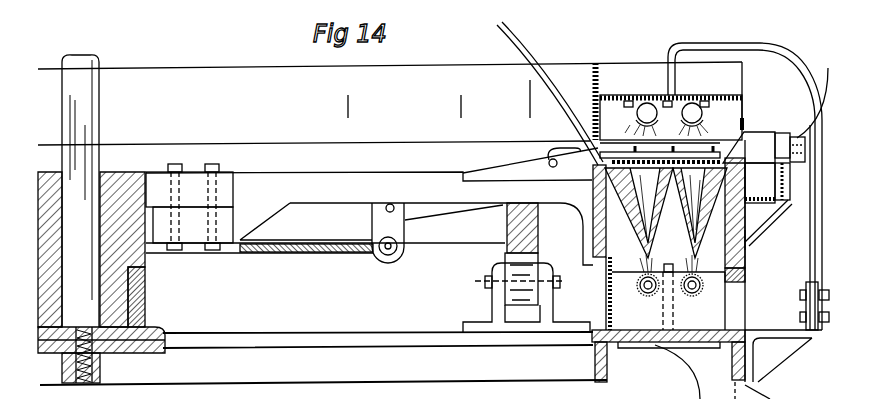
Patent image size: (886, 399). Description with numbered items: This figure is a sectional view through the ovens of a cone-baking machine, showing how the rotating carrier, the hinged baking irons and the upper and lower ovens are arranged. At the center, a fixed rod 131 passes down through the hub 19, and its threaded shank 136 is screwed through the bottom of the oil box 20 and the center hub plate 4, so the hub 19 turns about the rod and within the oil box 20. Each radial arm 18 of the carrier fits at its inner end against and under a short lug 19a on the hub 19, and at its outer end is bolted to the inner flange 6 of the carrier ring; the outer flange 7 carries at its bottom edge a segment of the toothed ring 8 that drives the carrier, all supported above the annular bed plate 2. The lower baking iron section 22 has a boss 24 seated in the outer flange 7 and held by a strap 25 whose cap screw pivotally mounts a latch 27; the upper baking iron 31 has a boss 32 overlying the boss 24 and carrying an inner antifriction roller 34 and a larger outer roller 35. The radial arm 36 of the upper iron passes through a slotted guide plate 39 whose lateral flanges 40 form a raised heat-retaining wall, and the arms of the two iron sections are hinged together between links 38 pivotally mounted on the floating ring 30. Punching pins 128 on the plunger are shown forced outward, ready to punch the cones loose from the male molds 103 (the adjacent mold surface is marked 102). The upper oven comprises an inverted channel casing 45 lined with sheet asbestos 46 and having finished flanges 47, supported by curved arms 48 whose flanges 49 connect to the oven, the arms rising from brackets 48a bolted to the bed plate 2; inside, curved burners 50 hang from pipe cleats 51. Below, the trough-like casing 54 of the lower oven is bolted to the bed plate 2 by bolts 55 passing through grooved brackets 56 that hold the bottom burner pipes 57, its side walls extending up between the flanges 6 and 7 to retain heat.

The rod 131 is at (98, 62).
The threaded shank 136 is at (112, 288).
The oil box 20 is at (143, 303).
The center hub plate 4 is at (167, 335).
The hub 19 is at (125, 172).
The lug 19a is at (183, 178).
The floating ring 30 is at (310, 255).
The radial arm 18 is at (305, 195).
The link 38 is at (402, 233).
The inner flange 6 is at (598, 256).
The bracket 56 is at (610, 288).
The bottom burner pipe 57 is at (697, 292).
The bolt 55 is at (668, 264).
The trough-like casing 54 is at (727, 297).
The toothed ring 8 is at (745, 272).
The outer flange 7 is at (745, 238).
The baking iron section 22 is at (720, 205).
The male mold 103 is at (620, 209).
The jaw segment 102 is at (620, 227).
The bed plate 2 is at (665, 338).
The bracket 48a is at (760, 343).
The curved arm 48 is at (812, 275).
The flange 47 is at (600, 87).
The flange 49 is at (700, 92).
The sheet asbestos 46 is at (650, 97).
The casing 45 is at (742, 110).
The outer roller 35 is at (825, 60).
The upper baking iron 31 is at (738, 135).
The boss 32 is at (762, 137).
The burner 50 is at (704, 113).
The pipe cleat 51 is at (700, 122).
The punching pin 128 is at (585, 118).
The lateral flange 40 is at (590, 128).
The radial arm 36 is at (527, 165).
The guide plate 39 is at (535, 48).
The inner antifriction roller 34 is at (760, 183).
The latch 27 is at (786, 172).
The boss 24 is at (780, 205).
The strap 25 is at (760, 222).